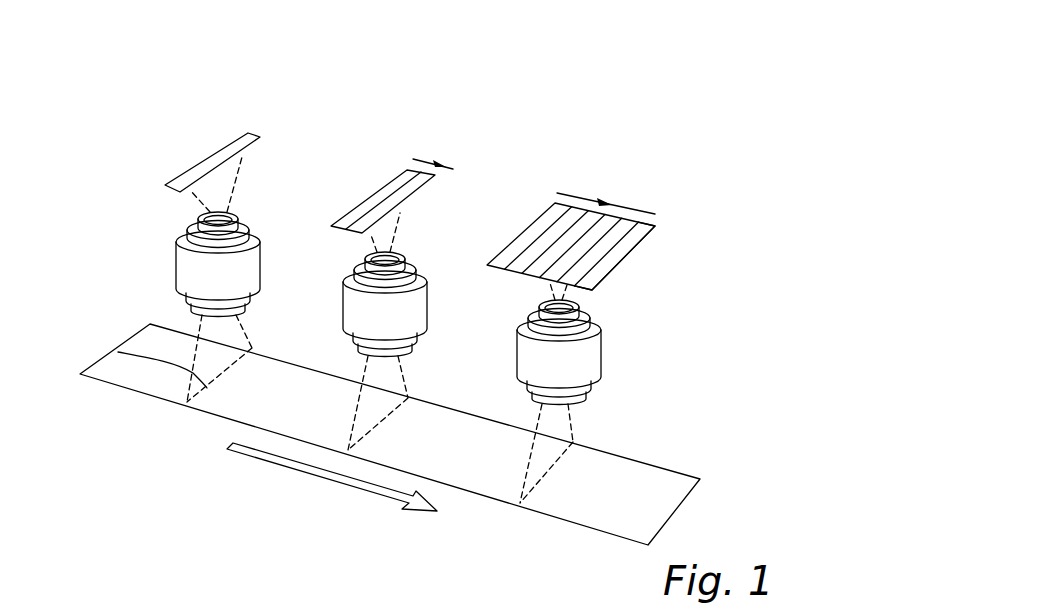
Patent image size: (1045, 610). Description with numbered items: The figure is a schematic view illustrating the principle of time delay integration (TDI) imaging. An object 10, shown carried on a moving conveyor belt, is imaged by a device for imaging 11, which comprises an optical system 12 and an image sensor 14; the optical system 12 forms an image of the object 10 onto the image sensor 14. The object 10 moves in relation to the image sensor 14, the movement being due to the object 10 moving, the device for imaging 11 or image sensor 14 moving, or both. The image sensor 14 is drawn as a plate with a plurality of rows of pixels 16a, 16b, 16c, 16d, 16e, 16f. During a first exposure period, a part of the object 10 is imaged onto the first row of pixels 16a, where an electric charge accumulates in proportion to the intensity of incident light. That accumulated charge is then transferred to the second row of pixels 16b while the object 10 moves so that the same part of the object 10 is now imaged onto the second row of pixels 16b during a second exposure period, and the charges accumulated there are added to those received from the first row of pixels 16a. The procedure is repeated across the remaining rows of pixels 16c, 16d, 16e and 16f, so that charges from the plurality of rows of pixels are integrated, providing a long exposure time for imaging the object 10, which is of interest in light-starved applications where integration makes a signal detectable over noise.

The object 10 is at (118, 352).
The device for imaging 11 is at (140, 110).
The optical system 12 is at (192, 265).
The image sensor 14 is at (672, 128).
The first row of pixels 16a is at (250, 134).
The second row of pixels 16b is at (404, 193).
The row of pixels 16c is at (578, 230).
The row of pixels 16d is at (600, 230).
The row of pixels 16e is at (622, 230).
The row of pixels 16f is at (617, 256).